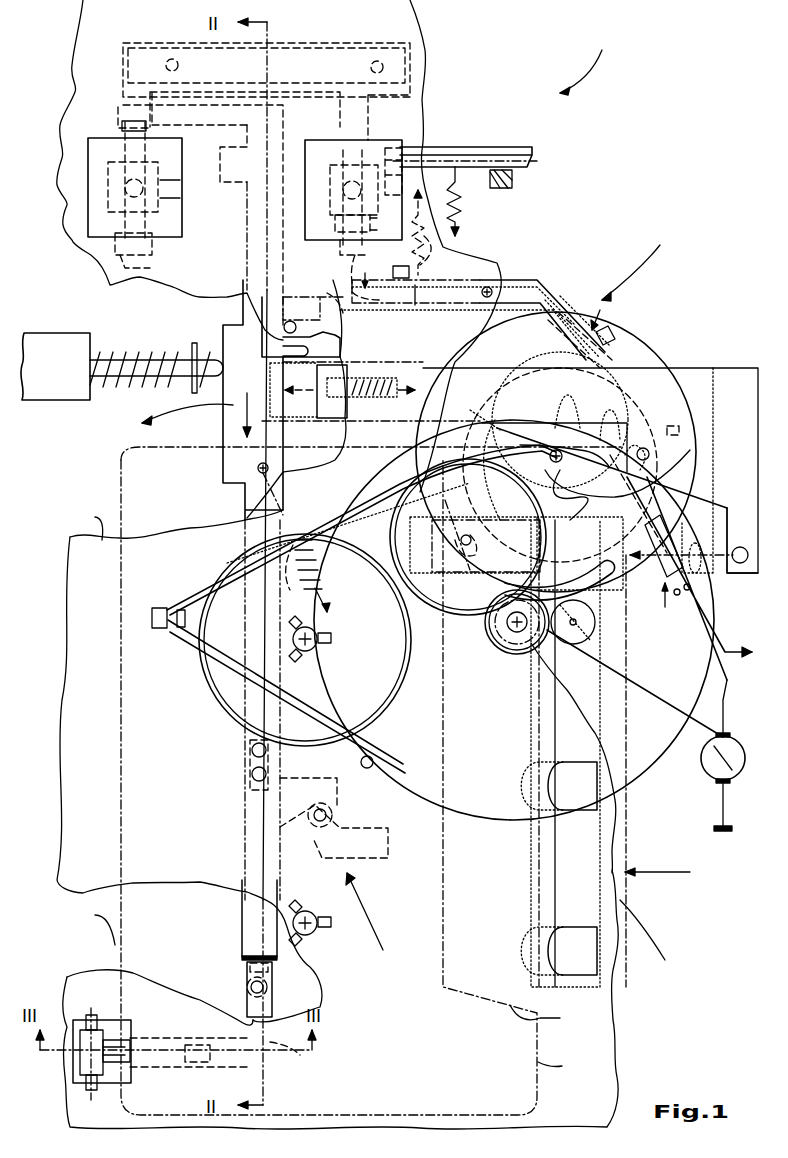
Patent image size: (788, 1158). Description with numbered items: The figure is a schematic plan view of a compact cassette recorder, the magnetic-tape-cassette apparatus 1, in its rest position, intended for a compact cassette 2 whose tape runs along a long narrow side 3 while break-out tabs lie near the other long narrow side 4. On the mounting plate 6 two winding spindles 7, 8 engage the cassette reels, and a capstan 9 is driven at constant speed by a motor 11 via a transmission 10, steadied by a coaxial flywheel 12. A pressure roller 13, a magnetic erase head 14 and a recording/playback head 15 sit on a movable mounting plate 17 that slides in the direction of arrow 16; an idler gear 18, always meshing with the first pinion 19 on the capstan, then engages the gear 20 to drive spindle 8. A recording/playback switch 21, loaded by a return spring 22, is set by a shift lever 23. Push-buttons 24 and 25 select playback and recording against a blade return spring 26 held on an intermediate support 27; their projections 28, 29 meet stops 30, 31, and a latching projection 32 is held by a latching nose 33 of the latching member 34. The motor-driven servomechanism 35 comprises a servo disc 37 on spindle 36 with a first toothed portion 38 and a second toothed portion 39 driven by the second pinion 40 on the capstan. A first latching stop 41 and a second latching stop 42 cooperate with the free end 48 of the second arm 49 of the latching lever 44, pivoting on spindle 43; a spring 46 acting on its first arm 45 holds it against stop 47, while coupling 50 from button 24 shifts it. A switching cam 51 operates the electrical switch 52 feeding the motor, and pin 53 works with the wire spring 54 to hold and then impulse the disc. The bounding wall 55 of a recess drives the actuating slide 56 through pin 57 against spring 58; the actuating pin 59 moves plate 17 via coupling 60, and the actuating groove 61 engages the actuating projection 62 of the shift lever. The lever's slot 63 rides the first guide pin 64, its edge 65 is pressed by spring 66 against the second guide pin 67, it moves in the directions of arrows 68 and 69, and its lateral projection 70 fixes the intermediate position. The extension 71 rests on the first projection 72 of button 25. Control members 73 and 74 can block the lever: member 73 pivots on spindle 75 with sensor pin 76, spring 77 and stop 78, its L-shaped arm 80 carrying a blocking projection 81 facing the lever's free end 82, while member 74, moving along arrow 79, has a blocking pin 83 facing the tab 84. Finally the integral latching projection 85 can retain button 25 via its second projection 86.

The magnetic-tape-cassette apparatus 1 is at (589, 64).
The compact cassette 2 is at (541, 1016).
The long narrow side 3 is at (557, 1064).
The other long narrow side 4 is at (97, 924).
The mounting plate 6 is at (93, 520).
The winding spindle 7 is at (312, 912).
The winding spindle 8 is at (310, 650).
The capstan 9 is at (512, 632).
The transmission 10 is at (701, 750).
The motor 11 is at (712, 770).
The flywheel 12 is at (710, 712).
The pressure roller 13 is at (595, 622).
The magnetic erase head 14 is at (570, 935).
The recording/playback head 15 is at (570, 770).
The arrow 16 is at (690, 872).
The mounting plate 17 is at (651, 936).
The idler gear 18 is at (450, 600).
The first pinion 19 is at (495, 628).
The gear 20 is at (405, 665).
The recording/playback switch 21 is at (70, 330).
The return spring 22 is at (150, 355).
The shift lever 23 is at (220, 420).
The push-button 24 is at (328, 140).
The push-button 25 is at (83, 148).
The return spring 26 is at (330, 40).
The intermediate support 27 is at (362, 55).
The projection 28 is at (335, 225).
The projection 29 is at (152, 245).
The stop 30 is at (340, 250).
The stop 31 is at (150, 268).
The latching projection 32 is at (385, 225).
The latching nose 33 is at (390, 148).
The latching member 34 is at (470, 150).
The servomechanism 35 is at (642, 264).
The spindle 36 is at (540, 440).
The servo disc 37 is at (648, 355).
The first toothed portion 38 is at (615, 580).
The second toothed portion 39 is at (455, 560).
The second pinion 40 is at (517, 650).
The first latching stop 41 is at (575, 345).
The second latching stop 42 is at (679, 430).
The spindle 43 is at (487, 286).
The latching lever 44 is at (515, 280).
The first arm 45 is at (395, 300).
The spring 46 is at (431, 233).
The stop 47 is at (393, 268).
The free end 48 is at (614, 316).
The second arm 49 is at (555, 303).
The coupling 50 is at (352, 275).
The switching cam 51 is at (598, 420).
The electrical switch 52 is at (681, 591).
The pin 53 is at (503, 458).
The wire spring 54 is at (335, 505).
The bounding wall 55 is at (575, 515).
The actuating slide 56 is at (727, 368).
The pin 57 is at (648, 448).
The spring 58 is at (392, 375).
The actuating pin 59 is at (740, 547).
The coupling 60 is at (700, 590).
The actuating groove 61 is at (312, 395).
The actuating projection 62 is at (300, 362).
The slot 63 is at (250, 743).
The first guide pin 64 is at (253, 777).
The edge 65 is at (305, 343).
The spring 66 is at (306, 576).
The second guide pin 67 is at (296, 325).
The arrow 68 is at (243, 403).
The arrow 69 is at (175, 409).
The lateral projection 70 is at (319, 314).
The extension 71 is at (160, 122).
The first projection 72 is at (120, 125).
The first control member 73 is at (80, 1083).
The second control member 74 is at (388, 845).
The spindle 75 is at (98, 1010).
The sensor pin 76 is at (130, 1042).
The spring 77 is at (248, 990).
The stop 78 is at (197, 1062).
The arrow 79 is at (377, 911).
The L-shaped arm 80 is at (297, 1068).
The blocking projection 81 is at (250, 968).
The free end 82 is at (272, 970).
The blocking pin 83 is at (326, 815).
The tab 84 is at (340, 785).
The latching projection 85 is at (222, 180).
The second projection 86 is at (176, 177).